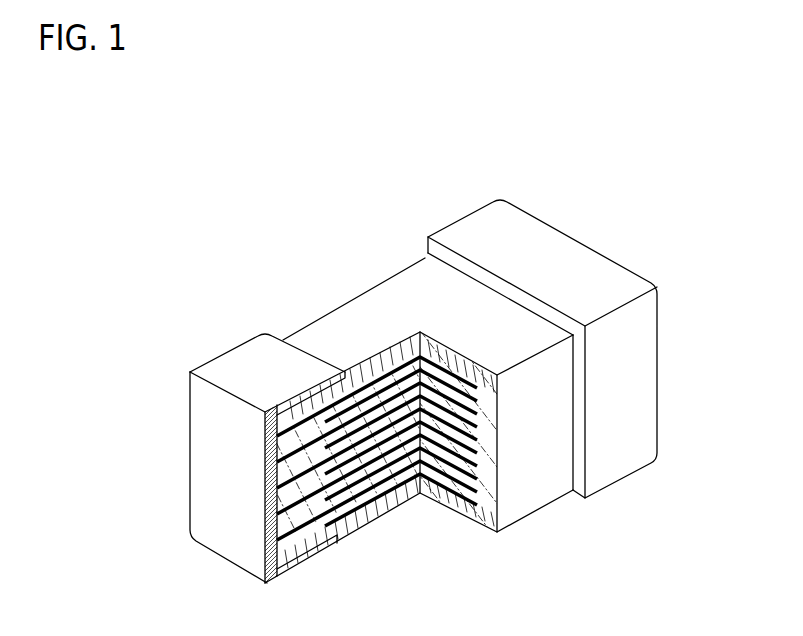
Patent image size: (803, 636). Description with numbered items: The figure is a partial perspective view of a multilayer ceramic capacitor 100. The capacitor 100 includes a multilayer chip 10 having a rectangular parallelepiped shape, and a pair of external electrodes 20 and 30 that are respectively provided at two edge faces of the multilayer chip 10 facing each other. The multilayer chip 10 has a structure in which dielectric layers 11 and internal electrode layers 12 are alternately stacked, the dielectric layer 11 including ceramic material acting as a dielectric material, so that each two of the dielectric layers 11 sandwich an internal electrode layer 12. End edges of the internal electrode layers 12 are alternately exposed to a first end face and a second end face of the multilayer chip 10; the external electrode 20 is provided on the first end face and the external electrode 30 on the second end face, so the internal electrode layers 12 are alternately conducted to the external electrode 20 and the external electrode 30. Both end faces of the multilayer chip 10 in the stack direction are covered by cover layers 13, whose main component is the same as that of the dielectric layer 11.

The multilayer ceramic capacitor 100 is at (738, 146).
The multilayer chip 10 is at (313, 318).
The dielectric layer 11 is at (360, 497).
The internal electrode layer 12 is at (387, 478).
The cover layer 13 is at (397, 287).
The external electrode 20 is at (237, 343).
The external electrode 30 is at (462, 228).